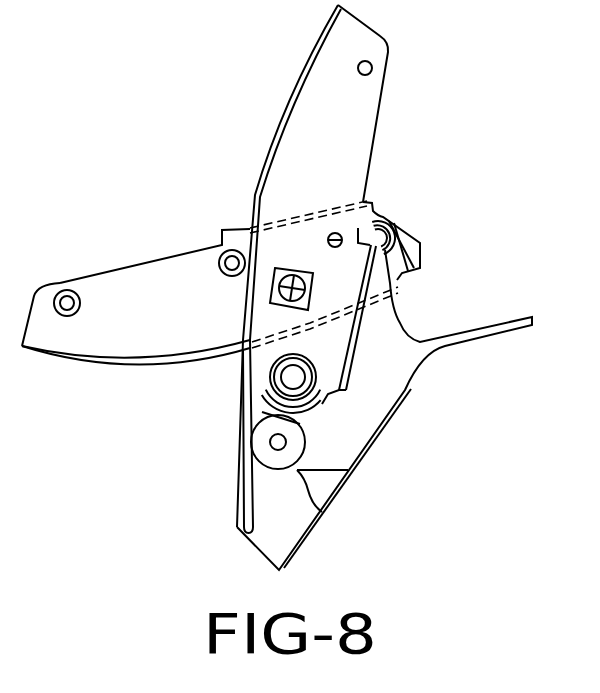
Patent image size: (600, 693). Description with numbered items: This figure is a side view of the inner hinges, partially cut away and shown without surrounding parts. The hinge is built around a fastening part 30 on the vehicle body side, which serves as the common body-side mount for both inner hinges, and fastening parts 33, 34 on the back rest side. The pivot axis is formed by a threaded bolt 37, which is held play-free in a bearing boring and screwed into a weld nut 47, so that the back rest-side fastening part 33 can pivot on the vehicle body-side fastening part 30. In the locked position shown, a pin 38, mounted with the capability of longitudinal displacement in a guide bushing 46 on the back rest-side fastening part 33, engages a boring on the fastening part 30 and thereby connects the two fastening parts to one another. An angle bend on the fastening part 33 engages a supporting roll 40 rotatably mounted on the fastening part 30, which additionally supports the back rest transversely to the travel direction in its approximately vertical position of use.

The fastening part on the vehicle body side 30 is at (403, 352).
The fastening part on the back rest side 33 is at (360, 128).
The fastening part on the back rest side 34 is at (130, 298).
The threaded bolt 37 is at (300, 268).
The pin 38 is at (288, 377).
The supporting roll 40 is at (270, 457).
The guide bushing 46 is at (312, 393).
The weld nut 47 is at (272, 262).